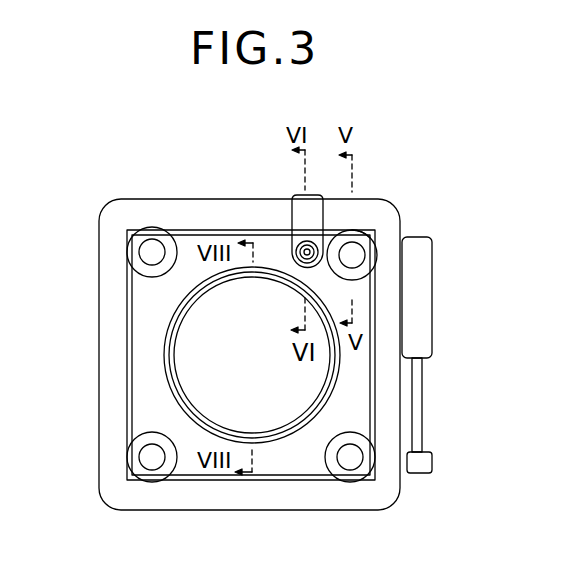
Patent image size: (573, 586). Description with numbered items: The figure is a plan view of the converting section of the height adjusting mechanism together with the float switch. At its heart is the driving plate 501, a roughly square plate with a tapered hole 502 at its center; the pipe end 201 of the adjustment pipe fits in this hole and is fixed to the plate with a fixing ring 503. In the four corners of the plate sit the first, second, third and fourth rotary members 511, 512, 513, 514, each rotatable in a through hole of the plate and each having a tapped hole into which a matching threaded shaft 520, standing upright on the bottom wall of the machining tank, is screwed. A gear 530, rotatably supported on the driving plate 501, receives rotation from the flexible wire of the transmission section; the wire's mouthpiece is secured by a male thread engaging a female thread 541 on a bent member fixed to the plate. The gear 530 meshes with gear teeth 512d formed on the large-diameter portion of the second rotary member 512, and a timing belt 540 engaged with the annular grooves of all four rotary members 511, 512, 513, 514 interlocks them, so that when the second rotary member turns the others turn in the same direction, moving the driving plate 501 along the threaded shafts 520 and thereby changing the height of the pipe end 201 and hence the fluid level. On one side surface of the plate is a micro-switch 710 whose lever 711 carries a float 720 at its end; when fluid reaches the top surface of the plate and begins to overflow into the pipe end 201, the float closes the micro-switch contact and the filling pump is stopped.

The pipe end 201 is at (284, 443).
The driving plate 501 is at (108, 467).
The tapered hole 502 is at (178, 368).
The fixing ring 503 is at (328, 368).
The first rotary member 511 is at (150, 228).
The second rotary member 512 is at (362, 230).
The gear teeth 512d is at (367, 242).
The third rotary member 513 is at (140, 478).
The fourth rotary member 514 is at (370, 478).
The threaded shaft 520 is at (140, 250).
The gear 530 is at (292, 215).
The timing belt 540 is at (123, 323).
The female thread 541 is at (294, 251).
The micro-switch 710 is at (433, 302).
The lever 711 is at (422, 418).
The float 720 is at (432, 460).